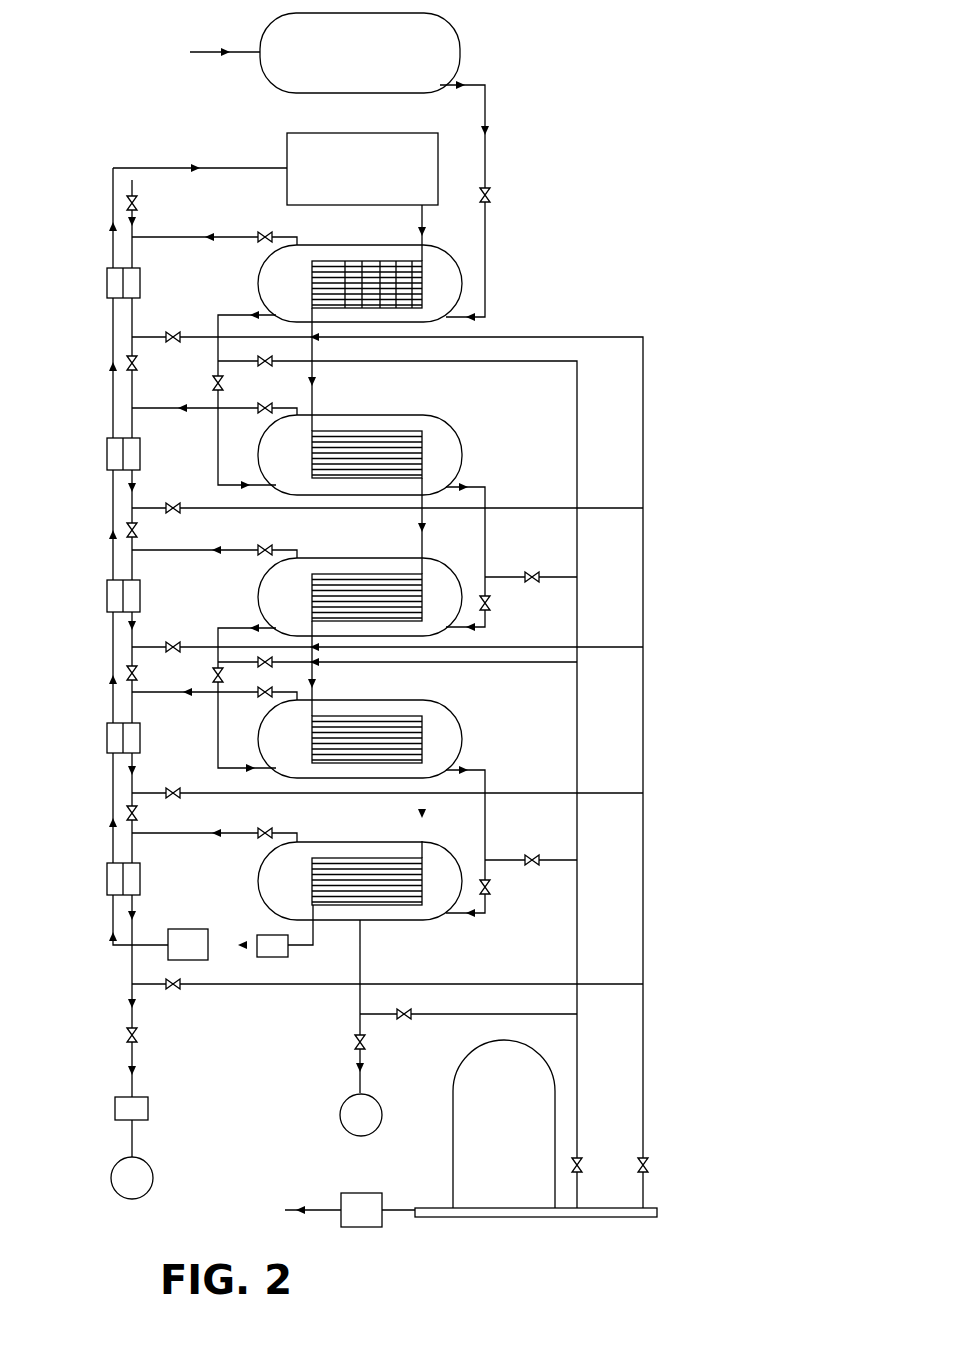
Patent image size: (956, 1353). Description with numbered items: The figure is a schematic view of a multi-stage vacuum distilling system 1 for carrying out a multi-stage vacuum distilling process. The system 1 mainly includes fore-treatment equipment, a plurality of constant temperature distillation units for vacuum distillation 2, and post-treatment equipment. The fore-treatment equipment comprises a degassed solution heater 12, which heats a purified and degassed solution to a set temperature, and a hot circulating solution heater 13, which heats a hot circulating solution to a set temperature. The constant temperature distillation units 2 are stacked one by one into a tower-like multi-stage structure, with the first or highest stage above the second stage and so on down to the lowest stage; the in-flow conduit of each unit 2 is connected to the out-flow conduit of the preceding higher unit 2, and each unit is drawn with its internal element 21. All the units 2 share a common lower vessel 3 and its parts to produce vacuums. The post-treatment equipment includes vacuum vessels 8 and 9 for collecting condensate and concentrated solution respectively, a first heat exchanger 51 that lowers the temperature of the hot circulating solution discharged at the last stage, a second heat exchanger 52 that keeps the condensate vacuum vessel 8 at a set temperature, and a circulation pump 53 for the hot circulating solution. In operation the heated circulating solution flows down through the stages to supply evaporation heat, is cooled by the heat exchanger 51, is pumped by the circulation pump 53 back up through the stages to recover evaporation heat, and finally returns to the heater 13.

The multi-stage vacuum distilling system 1 is at (379, 614).
The constant temperature distillation unit for vacuum distillation 2 is at (466, 260).
The common lower vessel 3 is at (453, 1158).
The vacuum vessel for collecting condensate 8 is at (132, 1178).
The vacuum vessel for collecting concentrated solution 9 is at (361, 1115).
The degassed solution heater 12 is at (455, 38).
The hot circulating solution heater 13 is at (288, 133).
The tube bundle 21 is at (358, 245).
The first heat exchanger 51 is at (262, 935).
The second heat exchanger 52 is at (115, 1108).
The circulation pump 53 is at (197, 962).